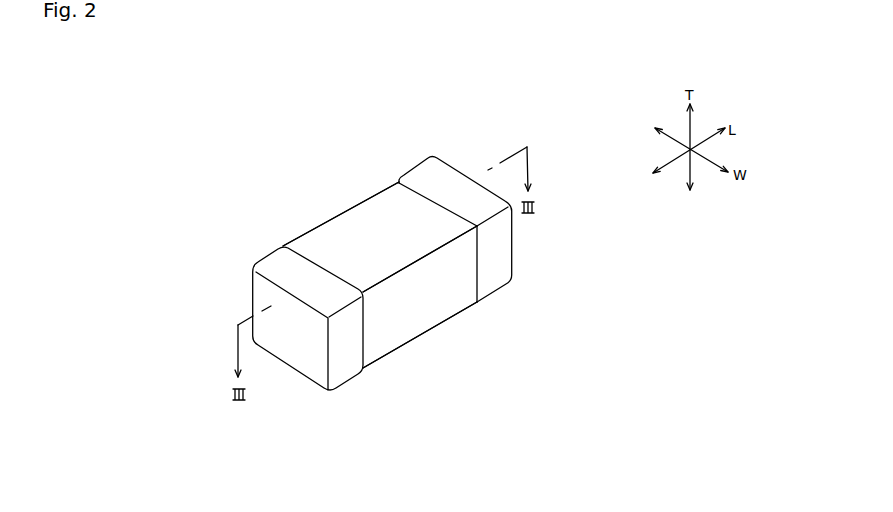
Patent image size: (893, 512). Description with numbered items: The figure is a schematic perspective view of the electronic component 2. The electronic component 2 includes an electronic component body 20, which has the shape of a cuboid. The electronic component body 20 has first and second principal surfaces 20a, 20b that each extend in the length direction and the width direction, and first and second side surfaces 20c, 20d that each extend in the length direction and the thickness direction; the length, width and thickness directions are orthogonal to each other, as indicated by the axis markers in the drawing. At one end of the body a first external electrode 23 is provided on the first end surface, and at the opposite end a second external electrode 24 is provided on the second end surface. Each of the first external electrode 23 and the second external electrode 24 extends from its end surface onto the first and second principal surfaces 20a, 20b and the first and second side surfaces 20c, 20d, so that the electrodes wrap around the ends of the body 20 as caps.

The electronic component 2 is at (465, 136).
The electronic component body 20 is at (372, 183).
The first principal surface 20a is at (368, 220).
The second principal surface 20b is at (410, 342).
The first side surface 20c is at (389, 182).
The second side surface 20d is at (383, 345).
The first external electrode 23 is at (250, 301).
The second external electrode 24 is at (513, 246).